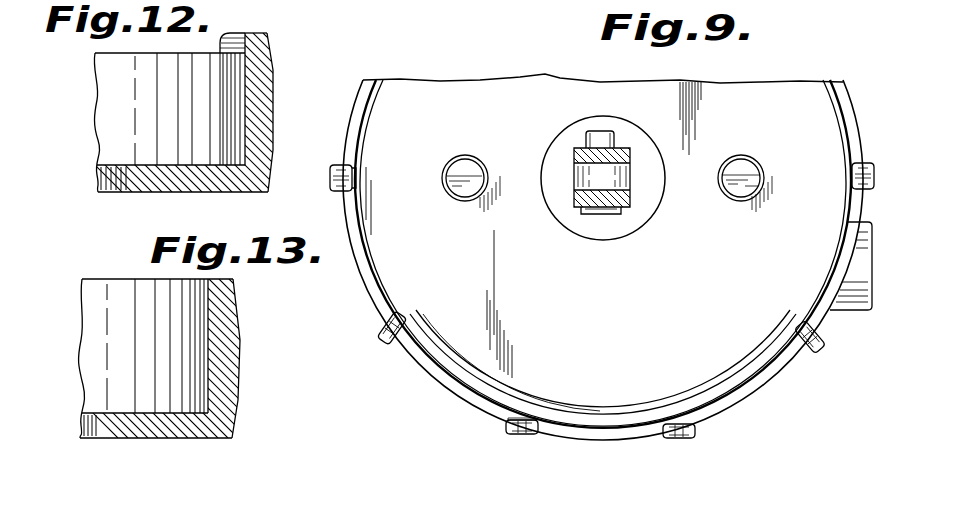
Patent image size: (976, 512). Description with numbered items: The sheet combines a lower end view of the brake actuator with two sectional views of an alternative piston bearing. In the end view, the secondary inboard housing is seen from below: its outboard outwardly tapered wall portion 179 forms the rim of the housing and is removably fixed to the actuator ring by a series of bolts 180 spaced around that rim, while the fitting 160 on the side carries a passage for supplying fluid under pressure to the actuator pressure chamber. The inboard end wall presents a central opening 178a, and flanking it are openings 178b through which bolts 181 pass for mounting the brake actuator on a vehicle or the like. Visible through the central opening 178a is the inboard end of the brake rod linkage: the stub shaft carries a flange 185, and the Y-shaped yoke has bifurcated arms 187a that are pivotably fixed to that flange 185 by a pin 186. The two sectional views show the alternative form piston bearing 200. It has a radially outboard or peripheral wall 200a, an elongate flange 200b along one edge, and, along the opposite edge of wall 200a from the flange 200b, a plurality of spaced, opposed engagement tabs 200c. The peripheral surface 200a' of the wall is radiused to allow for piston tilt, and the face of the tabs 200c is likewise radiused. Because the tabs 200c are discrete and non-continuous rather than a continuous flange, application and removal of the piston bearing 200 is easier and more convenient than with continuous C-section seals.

In FIG. 9, the fitting 160 is at (860, 272).
In FIG. 9, the central opening 178a is at (625, 234).
In FIG. 9, the openings 178b is at (480, 168).
In FIG. 9, the outboard outwardly tapered wall portion 179 is at (379, 299).
In FIG. 9, the bolts 180 is at (336, 183).
In FIG. 9, the bolts 181 is at (462, 159).
In FIG. 9, the flange 185 is at (574, 182).
In FIG. 9, the pin 186 is at (586, 138).
In FIG. 9, the bifurcated arms 187a is at (576, 203).
In FIG. 12, the piston bearing 200 is at (224, 31).
In FIG. 12, the engagement tabs 200c is at (247, 33).
In FIG. 12, the peripheral wall 200a is at (216, 112).
In FIG. 13, the peripheral wall 200a is at (199, 358).
In FIG. 13, the peripheral surface 200a' is at (279, 358).
In FIG. 12, the elongate flange 200b is at (215, 193).
In FIG. 13, the elongate flange 200b is at (152, 432).